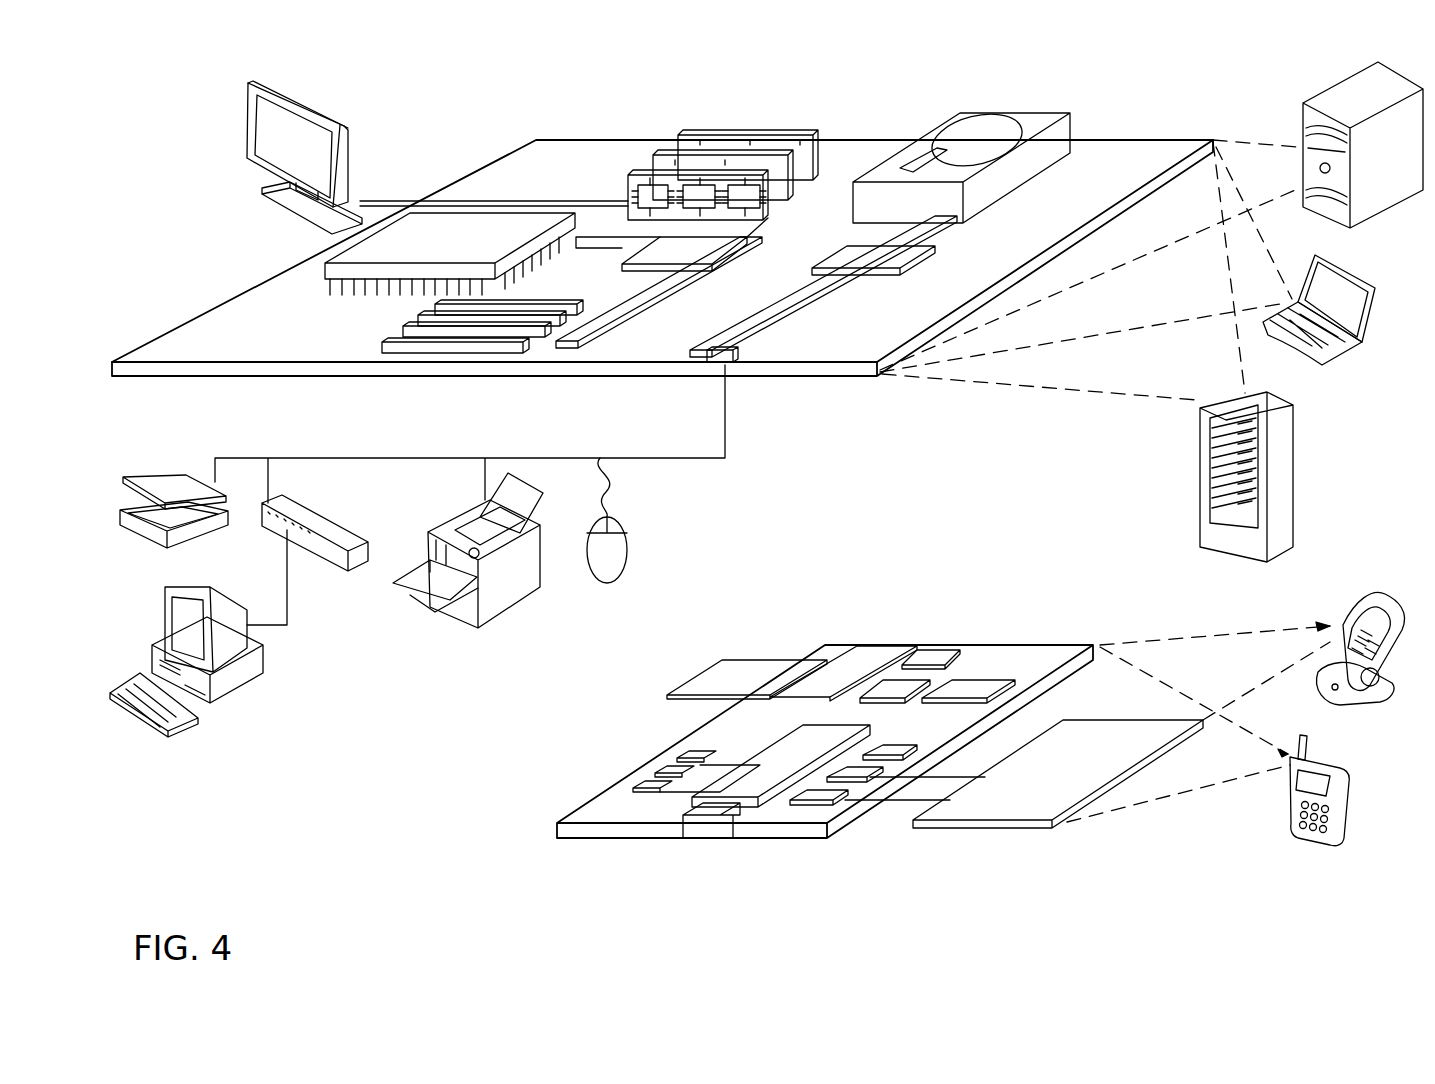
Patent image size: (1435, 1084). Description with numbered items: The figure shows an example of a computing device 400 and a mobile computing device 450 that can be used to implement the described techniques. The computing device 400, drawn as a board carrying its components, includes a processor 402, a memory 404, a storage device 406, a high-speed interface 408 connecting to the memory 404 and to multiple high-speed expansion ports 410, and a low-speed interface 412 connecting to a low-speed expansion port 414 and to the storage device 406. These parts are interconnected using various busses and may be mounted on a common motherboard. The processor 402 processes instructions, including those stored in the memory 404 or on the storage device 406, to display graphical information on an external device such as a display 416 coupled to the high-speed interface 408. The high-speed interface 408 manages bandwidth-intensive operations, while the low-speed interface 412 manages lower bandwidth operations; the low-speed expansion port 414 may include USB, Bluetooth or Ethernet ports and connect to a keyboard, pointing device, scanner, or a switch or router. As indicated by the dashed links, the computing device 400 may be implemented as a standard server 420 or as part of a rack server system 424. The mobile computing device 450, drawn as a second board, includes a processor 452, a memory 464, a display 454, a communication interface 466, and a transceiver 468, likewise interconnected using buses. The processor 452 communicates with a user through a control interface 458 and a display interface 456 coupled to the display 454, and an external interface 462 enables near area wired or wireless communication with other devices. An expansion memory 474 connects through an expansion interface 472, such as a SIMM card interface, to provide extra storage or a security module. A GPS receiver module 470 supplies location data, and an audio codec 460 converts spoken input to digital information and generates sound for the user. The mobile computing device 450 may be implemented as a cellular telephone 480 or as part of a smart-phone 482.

The computing device 400 is at (466, 104).
The processor 402 is at (325, 268).
The memory 404 is at (690, 135).
The storage device 406 is at (938, 118).
The high-speed interface 408 is at (670, 252).
The high-speed expansion ports 410 is at (400, 330).
The low-speed interface 412 is at (850, 258).
The low-speed expansion port 414 is at (742, 364).
The display 416 is at (252, 82).
The standard server 420 is at (1303, 122).
The rack server system 424 is at (1200, 502).
The mobile computing device 450 is at (530, 833).
The processor 452 is at (750, 810).
The display 454 is at (1012, 810).
The display interface 456 is at (820, 806).
The control interface 458 is at (860, 782).
The audio codec 460 is at (890, 757).
The external interface 462 is at (712, 828).
The memory 464 is at (650, 784).
The communication interface 466 is at (885, 686).
The transceiver 468 is at (970, 688).
The GPS receiver module 470 is at (940, 650).
The expansion interface 472 is at (805, 660).
The expansion memory 474 is at (720, 662).
The cellular telephone 480 is at (1358, 612).
The smart-phone 482 is at (1292, 790).